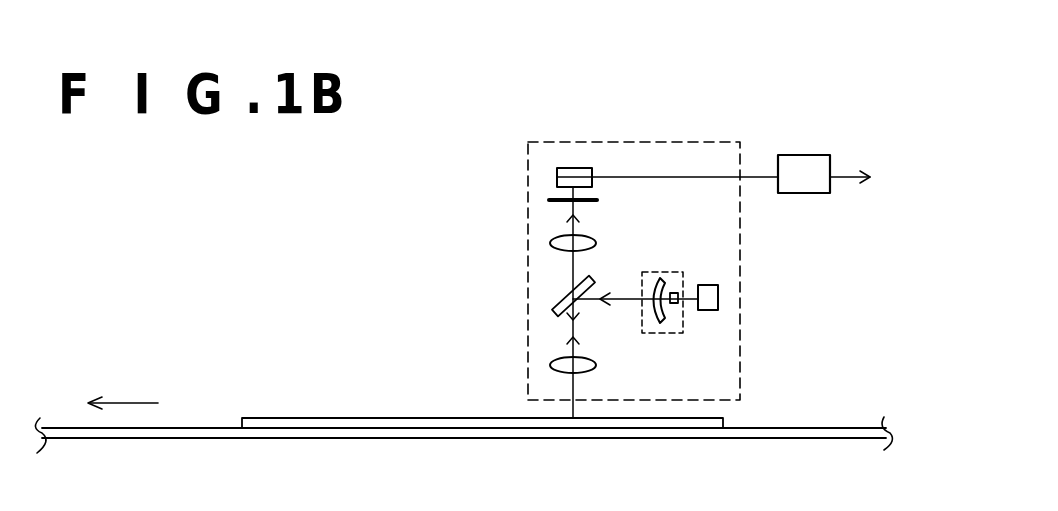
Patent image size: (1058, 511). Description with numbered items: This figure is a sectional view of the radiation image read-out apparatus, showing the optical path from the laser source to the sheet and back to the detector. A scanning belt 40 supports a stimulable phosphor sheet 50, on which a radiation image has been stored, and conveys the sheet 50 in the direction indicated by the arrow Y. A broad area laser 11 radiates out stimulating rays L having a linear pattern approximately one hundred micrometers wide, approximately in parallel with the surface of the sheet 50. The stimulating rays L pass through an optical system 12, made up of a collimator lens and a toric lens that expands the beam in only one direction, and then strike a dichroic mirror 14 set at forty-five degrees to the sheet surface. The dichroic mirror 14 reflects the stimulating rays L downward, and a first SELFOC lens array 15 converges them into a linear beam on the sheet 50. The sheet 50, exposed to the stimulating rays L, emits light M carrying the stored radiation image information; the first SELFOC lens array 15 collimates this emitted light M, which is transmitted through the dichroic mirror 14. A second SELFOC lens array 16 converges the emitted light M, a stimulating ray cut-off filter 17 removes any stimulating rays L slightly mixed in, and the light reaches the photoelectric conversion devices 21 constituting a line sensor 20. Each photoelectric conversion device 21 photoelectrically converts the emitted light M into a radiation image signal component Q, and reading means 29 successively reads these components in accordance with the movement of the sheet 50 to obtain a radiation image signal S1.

The broad area laser 11 is at (718, 299).
The optical system 12 is at (672, 270).
The dichroic mirror 14 is at (553, 307).
The first SELFOC lens array 15 is at (597, 365).
The second SELFOC lens array 16 is at (550, 237).
The stimulating ray cut-off filter 17 is at (547, 200).
The line sensor 20 is at (619, 170).
The photoelectric conversion device 21 is at (557, 183).
The reading means 29 is at (803, 155).
The scanning belt 40 is at (822, 427).
The stimulable phosphor sheet 50 is at (312, 417).
The stimulating rays L is at (630, 297).
The emitted light M is at (573, 270).
The radiation image signal component Q is at (692, 176).
The radiation image signal S1 is at (843, 172).
The conveyance direction arrow Y is at (123, 390).